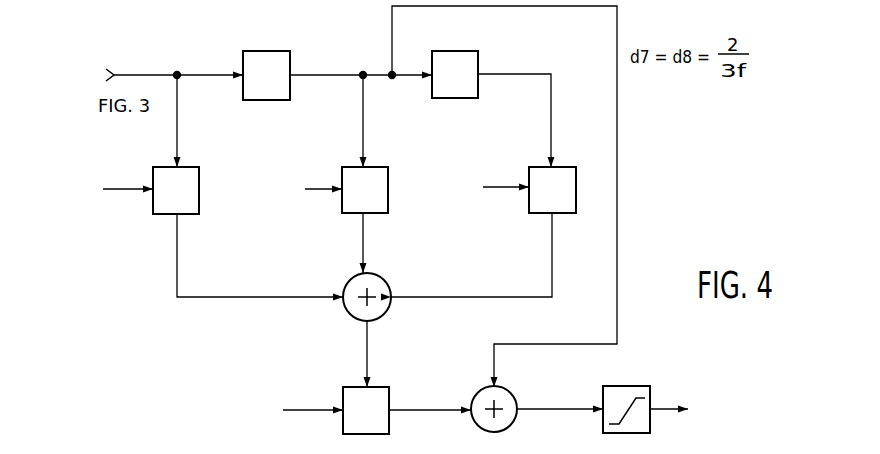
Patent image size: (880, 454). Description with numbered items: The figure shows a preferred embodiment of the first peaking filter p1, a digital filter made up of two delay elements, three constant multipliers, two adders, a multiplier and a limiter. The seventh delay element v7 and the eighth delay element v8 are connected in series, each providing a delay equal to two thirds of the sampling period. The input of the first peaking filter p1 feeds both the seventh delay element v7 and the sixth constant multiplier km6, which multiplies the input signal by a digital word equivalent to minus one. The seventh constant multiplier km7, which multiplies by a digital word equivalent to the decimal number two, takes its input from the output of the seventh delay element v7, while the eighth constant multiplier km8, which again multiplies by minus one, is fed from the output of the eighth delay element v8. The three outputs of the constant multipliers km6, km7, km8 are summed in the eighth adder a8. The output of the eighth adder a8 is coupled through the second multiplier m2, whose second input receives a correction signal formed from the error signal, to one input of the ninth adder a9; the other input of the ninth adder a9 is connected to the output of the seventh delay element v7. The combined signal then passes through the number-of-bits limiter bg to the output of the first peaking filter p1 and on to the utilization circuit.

The seventh delay element v7 is at (269, 51).
The eighth delay element v8 is at (452, 51).
The sixth constant multiplier km6 is at (185, 167).
The seventh constant multiplier km7 is at (378, 167).
The eighth constant multiplier km8 is at (556, 167).
The first peaking filter p1 is at (278, 262).
The eighth adder a8 is at (378, 278).
The second multiplier m2 is at (378, 387).
The ninth adder a9 is at (508, 392).
The limiter bg is at (621, 386).